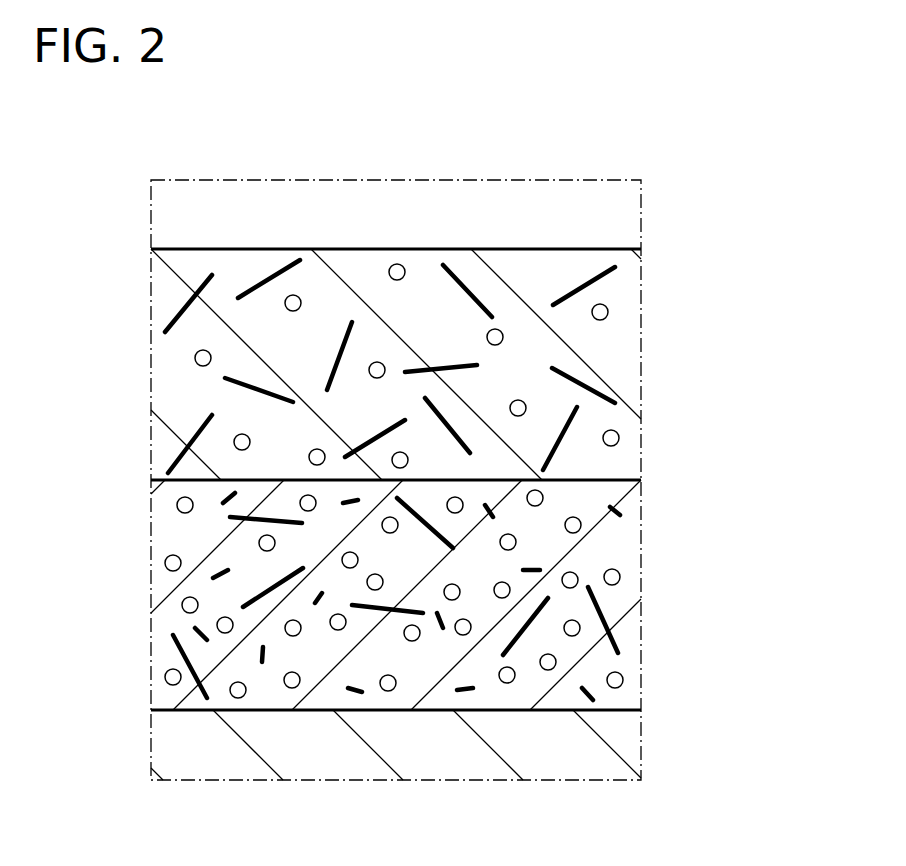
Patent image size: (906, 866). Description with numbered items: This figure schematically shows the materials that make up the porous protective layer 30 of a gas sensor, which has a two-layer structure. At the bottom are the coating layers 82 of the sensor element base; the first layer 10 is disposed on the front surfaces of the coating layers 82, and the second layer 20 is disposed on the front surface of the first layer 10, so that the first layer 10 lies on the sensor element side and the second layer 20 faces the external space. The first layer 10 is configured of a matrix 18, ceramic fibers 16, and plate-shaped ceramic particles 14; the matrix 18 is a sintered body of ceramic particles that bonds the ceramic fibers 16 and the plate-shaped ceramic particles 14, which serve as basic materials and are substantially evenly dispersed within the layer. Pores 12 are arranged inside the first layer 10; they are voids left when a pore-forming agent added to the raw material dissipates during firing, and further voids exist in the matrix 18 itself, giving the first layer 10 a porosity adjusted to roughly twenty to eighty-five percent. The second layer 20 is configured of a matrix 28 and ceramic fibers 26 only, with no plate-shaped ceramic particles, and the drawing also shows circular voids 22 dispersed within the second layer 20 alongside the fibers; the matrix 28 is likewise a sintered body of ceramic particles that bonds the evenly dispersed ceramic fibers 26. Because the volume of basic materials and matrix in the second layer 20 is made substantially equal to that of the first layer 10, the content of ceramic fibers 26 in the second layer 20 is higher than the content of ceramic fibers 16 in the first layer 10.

The porous protective layer 30 is at (717, 242).
The second layer 20 is at (409, 367).
The spherical filler of second layer 22 is at (609, 309).
The ceramic fibers 26 is at (183, 299).
The matrix 28 is at (625, 383).
The first layer 10 is at (411, 595).
The pores 12 is at (620, 577).
The plate-shaped ceramic particles 14 is at (214, 575).
The ceramic fibers 16 is at (170, 643).
The matrix 18 is at (625, 629).
The coating layers 82 is at (627, 743).